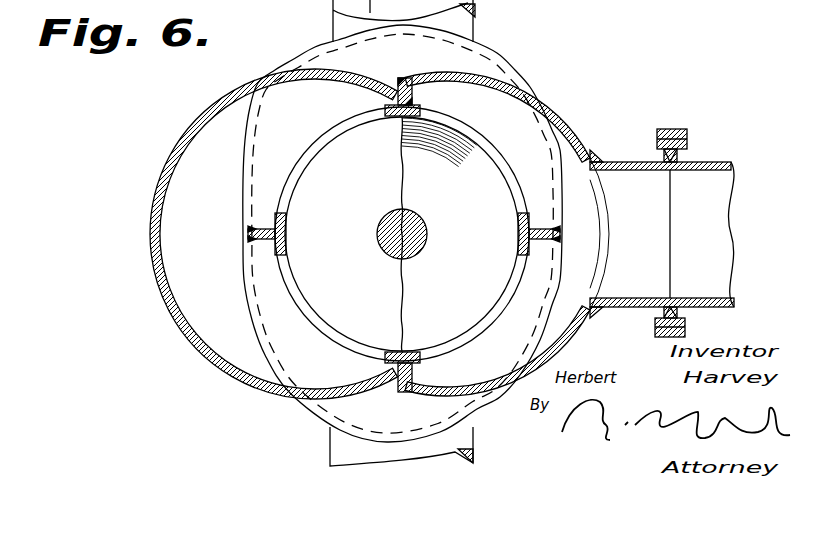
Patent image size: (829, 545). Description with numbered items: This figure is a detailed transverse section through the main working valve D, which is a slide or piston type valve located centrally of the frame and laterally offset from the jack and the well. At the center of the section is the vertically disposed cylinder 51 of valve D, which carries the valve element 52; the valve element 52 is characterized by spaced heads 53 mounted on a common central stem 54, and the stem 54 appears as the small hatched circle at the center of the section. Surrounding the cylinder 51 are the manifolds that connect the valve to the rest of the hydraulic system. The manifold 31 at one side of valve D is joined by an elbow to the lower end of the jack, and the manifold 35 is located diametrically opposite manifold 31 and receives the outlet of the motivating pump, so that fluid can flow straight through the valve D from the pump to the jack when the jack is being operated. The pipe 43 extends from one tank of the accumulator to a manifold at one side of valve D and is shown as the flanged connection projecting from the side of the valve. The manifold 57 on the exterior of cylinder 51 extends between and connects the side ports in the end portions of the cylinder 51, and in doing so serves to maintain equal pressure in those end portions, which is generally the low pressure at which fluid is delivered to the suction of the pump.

The manifold 31 is at (488, 58).
The manifold 35 is at (310, 410).
The pipe 43 is at (735, 150).
The cylinder 51 is at (295, 224).
The valve element 52 is at (370, 234).
The heads 53 is at (439, 169).
The central stem 54 is at (388, 247).
The manifold 57 is at (150, 238).
The main valve D is at (553, 108).